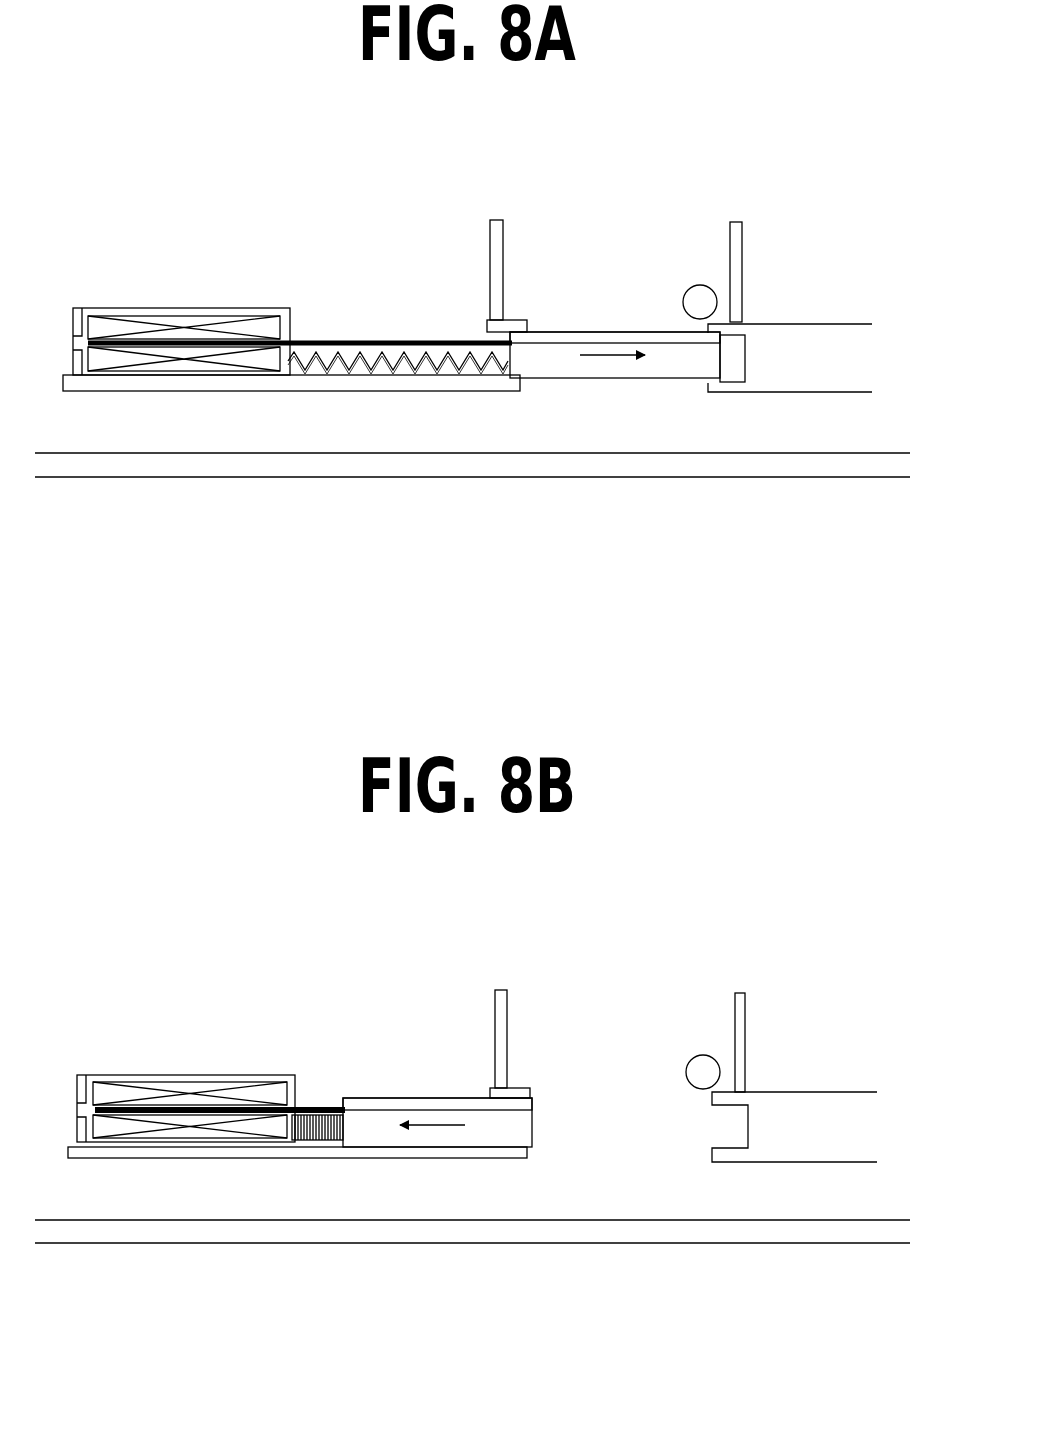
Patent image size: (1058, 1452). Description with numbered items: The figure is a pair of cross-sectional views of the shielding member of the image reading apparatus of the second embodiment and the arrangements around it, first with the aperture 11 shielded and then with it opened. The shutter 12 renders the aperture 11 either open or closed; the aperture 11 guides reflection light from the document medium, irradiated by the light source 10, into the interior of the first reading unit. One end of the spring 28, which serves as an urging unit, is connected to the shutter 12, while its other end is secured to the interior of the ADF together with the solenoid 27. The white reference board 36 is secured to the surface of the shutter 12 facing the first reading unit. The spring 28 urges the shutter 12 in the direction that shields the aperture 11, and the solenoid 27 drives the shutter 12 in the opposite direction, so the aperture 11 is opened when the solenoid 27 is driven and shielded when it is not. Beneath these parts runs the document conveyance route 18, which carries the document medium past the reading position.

In FIG. 8A, the light source 10 is at (696, 300).
In FIG. 8B, the light source 10 is at (702, 1067).
In FIG. 8A, the aperture 11 is at (620, 318).
In FIG. 8B, the aperture 11 is at (605, 1085).
In FIG. 8A, the shutter 12 is at (688, 367).
In FIG. 8B, the shutter 12 is at (508, 1120).
In FIG. 8A, the document conveyance route 18 is at (503, 418).
In FIG. 8B, the document conveyance route 18 is at (635, 1197).
In FIG. 8A, the solenoid 27 is at (201, 318).
In FIG. 8B, the solenoid 27 is at (193, 1078).
In FIG. 8A, the spring 28 is at (413, 362).
In FIG. 8B, the spring 28 is at (300, 1140).
In FIG. 8A, the white reference board 36 is at (547, 335).
In FIG. 8B, the white reference board 36 is at (405, 1098).